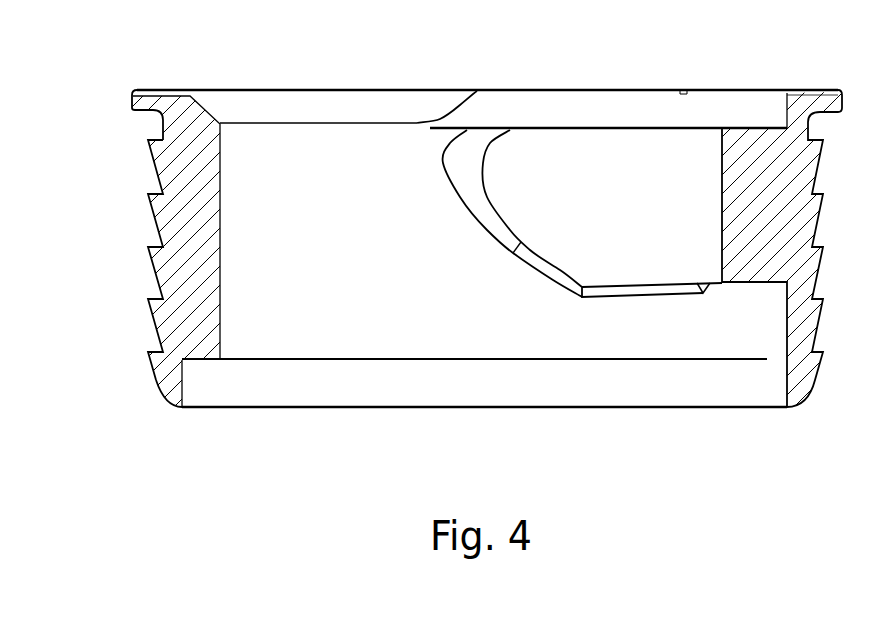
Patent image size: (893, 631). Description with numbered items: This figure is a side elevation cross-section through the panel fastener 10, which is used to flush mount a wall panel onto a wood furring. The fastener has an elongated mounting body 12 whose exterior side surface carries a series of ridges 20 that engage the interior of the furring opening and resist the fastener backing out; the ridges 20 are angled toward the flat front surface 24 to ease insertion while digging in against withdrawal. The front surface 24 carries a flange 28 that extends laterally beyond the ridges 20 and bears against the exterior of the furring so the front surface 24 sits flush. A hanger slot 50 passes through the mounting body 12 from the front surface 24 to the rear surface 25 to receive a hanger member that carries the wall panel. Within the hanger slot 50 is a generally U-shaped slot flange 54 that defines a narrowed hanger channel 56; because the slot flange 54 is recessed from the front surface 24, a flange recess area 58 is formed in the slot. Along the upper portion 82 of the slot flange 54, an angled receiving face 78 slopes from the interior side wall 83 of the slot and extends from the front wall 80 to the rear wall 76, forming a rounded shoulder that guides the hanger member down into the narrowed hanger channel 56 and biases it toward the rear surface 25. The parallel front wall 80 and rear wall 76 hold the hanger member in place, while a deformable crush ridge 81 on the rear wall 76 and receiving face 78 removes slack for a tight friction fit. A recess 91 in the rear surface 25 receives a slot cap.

The panel fastener 10 is at (240, 70).
The elongated mounting body 12 is at (185, 180).
The ridges 20 is at (153, 322).
The front surface 24 is at (158, 90).
The rear surface 25 is at (179, 408).
The flange 28 is at (137, 112).
The hanger slot 50 is at (312, 170).
The slot flange 54 is at (597, 170).
The narrowed hanger channel 56 is at (658, 160).
The flange recess area 58 is at (713, 90).
The rear wall 76 is at (713, 287).
The angled receiving face 78 is at (467, 185).
The front wall 80 is at (548, 125).
The crush ridge 81 is at (618, 290).
The upper portion 82 is at (422, 153).
The interior side wall 83 is at (400, 143).
The recess 91 is at (226, 394).